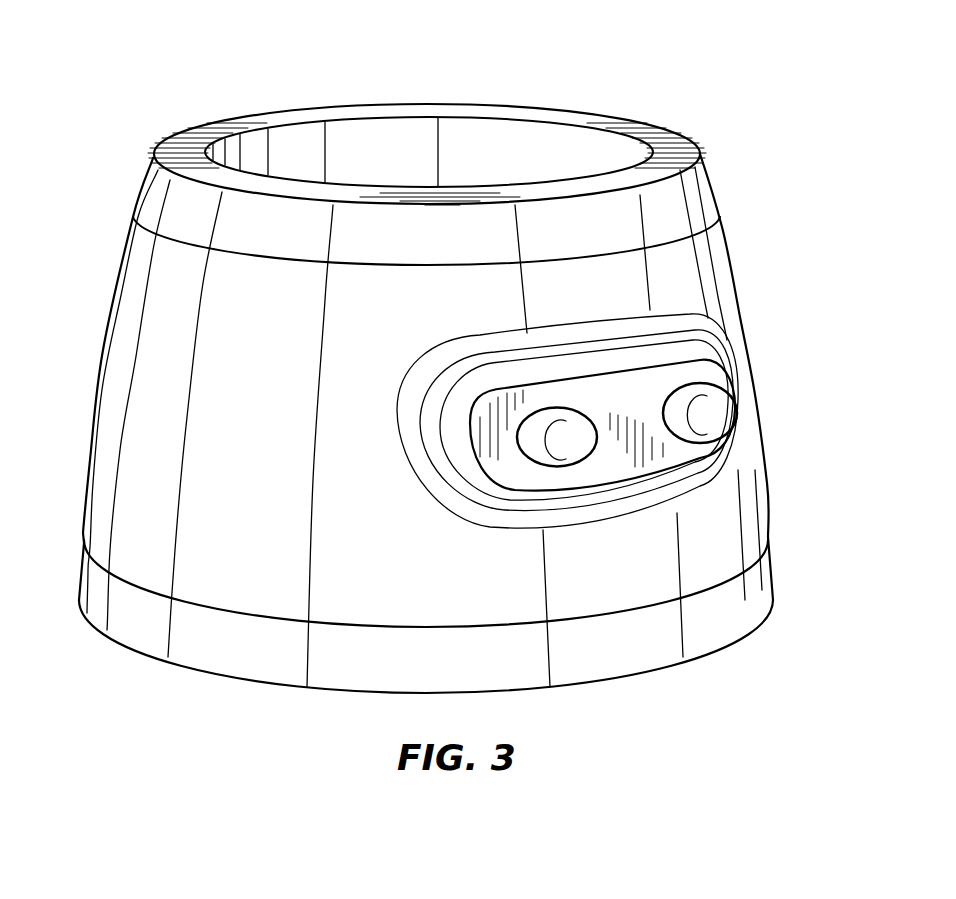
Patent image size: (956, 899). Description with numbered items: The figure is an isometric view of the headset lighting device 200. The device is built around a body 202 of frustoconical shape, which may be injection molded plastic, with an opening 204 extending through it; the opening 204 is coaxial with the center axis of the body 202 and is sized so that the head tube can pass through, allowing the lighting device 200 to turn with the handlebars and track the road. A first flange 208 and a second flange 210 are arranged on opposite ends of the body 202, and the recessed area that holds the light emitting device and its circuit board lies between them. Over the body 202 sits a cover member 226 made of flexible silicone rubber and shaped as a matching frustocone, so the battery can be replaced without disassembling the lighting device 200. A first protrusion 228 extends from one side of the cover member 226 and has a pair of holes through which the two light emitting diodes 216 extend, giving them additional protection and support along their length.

The lighting device 200 is at (460, 373).
The body 202 is at (663, 667).
The opening 204 is at (366, 136).
The first flange 208 is at (703, 180).
The second flange 210 is at (767, 580).
The light emitting diodes 216 is at (714, 400).
The cover member 226 is at (727, 250).
The first protrusion 228 is at (742, 437).